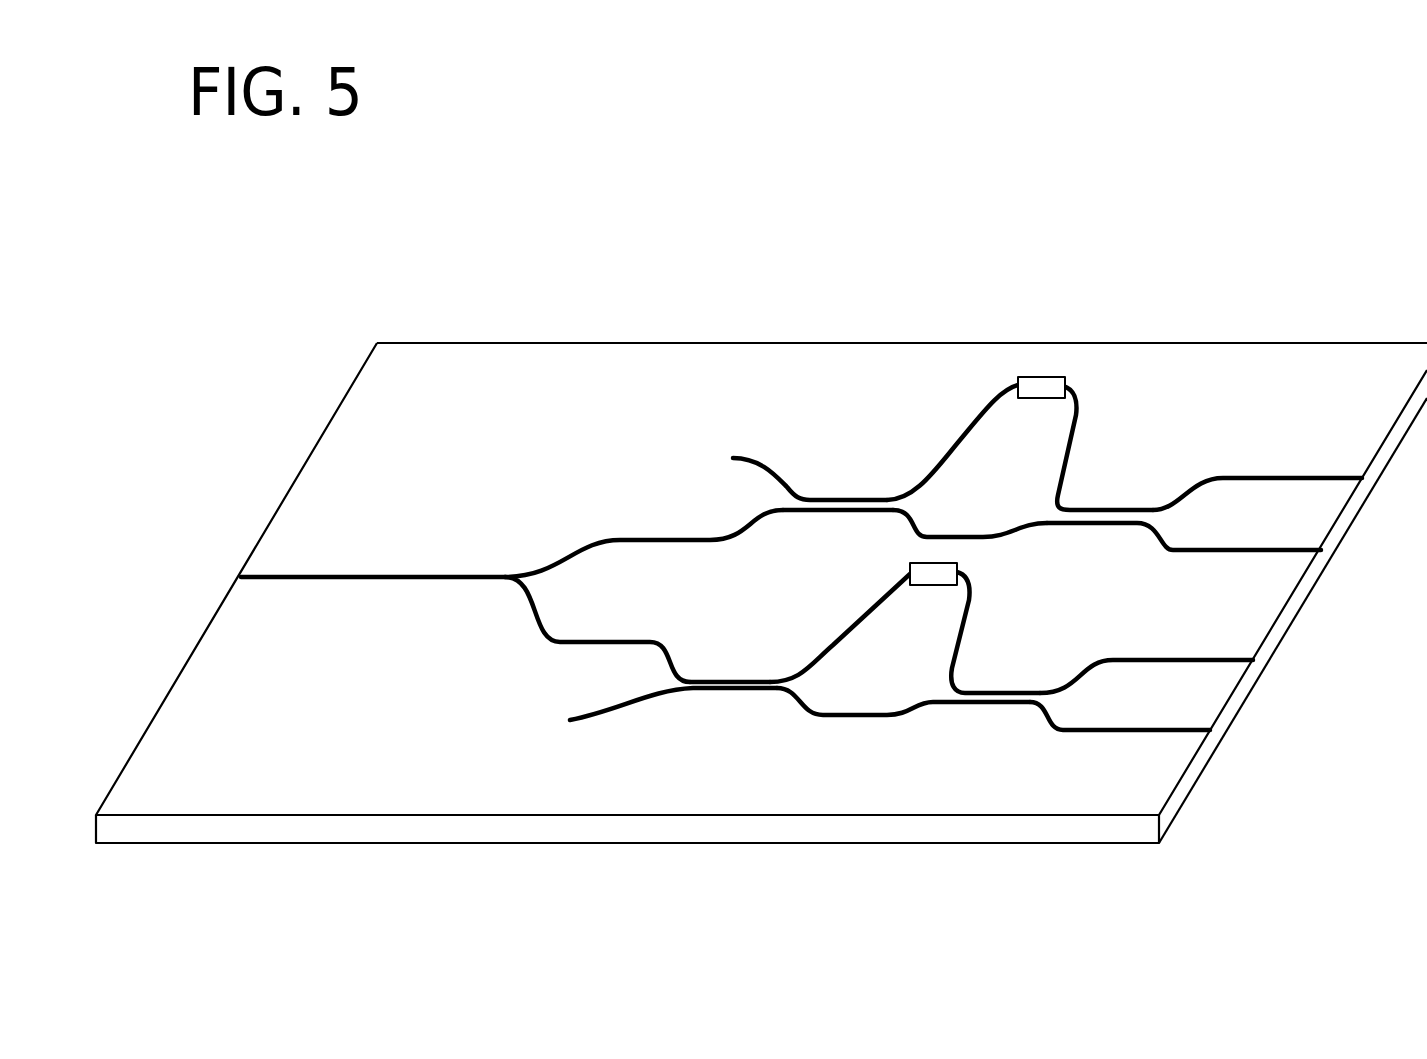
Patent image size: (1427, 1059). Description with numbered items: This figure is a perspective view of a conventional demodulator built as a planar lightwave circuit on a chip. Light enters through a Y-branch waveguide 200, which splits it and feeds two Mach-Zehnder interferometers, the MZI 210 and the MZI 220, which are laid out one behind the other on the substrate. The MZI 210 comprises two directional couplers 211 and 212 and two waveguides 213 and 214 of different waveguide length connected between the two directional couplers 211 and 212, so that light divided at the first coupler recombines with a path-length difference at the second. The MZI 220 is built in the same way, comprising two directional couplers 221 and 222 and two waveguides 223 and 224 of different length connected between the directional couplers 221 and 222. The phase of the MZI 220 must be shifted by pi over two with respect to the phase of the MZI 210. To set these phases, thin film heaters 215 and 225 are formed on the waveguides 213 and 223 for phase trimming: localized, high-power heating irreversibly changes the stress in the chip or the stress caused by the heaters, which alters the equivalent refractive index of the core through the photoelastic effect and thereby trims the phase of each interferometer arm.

The Y-branch waveguide 200 is at (509, 581).
The Mach-Zehnder interferometer 210 is at (1047, 442).
The directional coupler 211 is at (840, 500).
The directional coupler 212 is at (1093, 523).
The waveguide 213 is at (950, 450).
The waveguide 214 is at (978, 535).
The thin film heater 215 is at (1043, 377).
The Mach-Zehnder interferometer 220 is at (911, 676).
The directional coupler 221 is at (735, 692).
The directional coupler 222 is at (1002, 708).
The waveguide 223 is at (960, 635).
The waveguide 224 is at (858, 720).
The thin film heater 225 is at (933, 585).